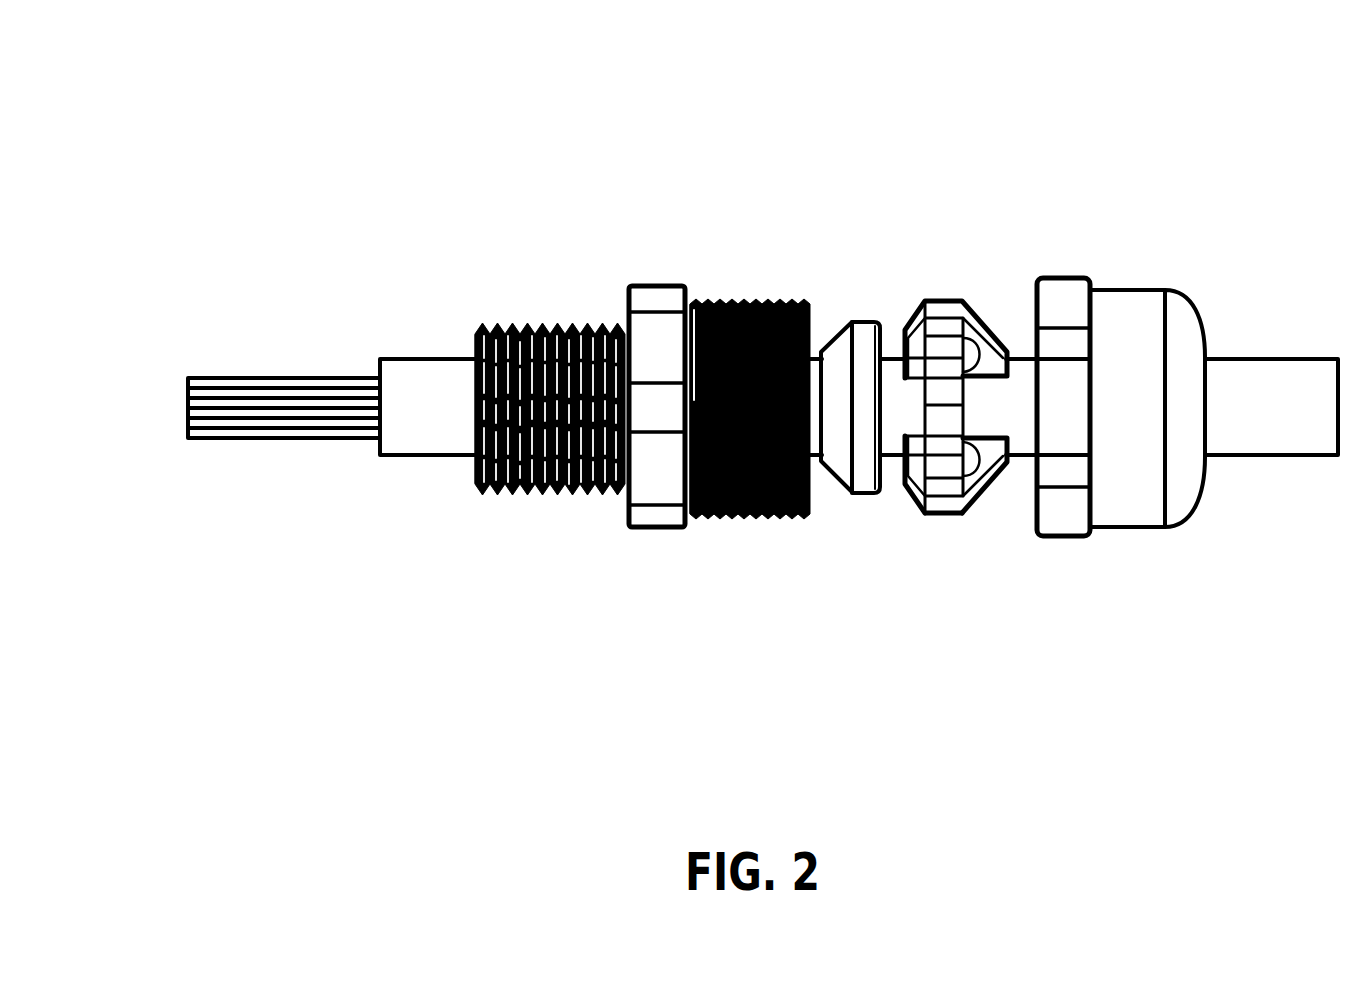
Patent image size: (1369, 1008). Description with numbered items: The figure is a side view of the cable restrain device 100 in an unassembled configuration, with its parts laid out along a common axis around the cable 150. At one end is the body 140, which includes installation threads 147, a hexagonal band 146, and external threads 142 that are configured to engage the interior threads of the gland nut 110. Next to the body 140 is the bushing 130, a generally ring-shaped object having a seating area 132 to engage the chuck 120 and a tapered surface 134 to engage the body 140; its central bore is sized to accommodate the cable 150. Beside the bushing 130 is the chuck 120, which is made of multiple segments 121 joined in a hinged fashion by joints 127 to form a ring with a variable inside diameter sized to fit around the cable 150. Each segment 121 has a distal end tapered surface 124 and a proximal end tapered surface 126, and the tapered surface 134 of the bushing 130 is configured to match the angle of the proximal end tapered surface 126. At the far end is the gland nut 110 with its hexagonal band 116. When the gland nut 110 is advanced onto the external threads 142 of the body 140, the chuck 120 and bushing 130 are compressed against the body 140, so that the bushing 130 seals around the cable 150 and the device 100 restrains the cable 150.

The cable restrain device 100 is at (305, 98).
The gland nut 110 is at (1142, 276).
The hexagonal band 116 is at (1062, 530).
The chuck 120 is at (947, 281).
The segments 121 is at (945, 518).
The distal end tapered surface 124 is at (985, 502).
The proximal end tapered surface 126 is at (908, 506).
The joints 127 is at (975, 422).
The bushing 130 is at (850, 309).
The seating area 132 is at (860, 488).
The tapered surface 134 is at (825, 482).
The body 140 is at (665, 273).
The external threads 142 is at (727, 518).
The hexagonal band 146 is at (642, 528).
The installation threads 147 is at (507, 490).
The cable 150 is at (415, 346).